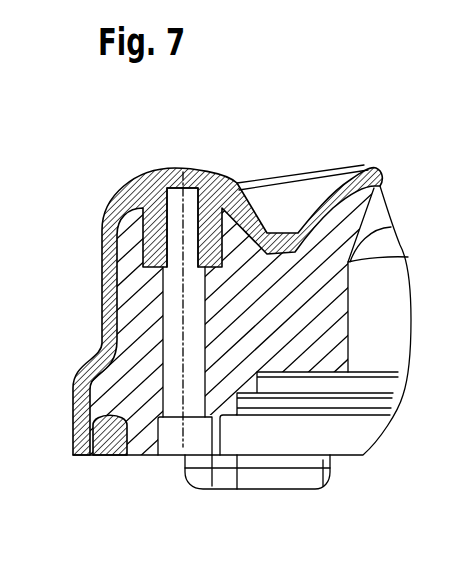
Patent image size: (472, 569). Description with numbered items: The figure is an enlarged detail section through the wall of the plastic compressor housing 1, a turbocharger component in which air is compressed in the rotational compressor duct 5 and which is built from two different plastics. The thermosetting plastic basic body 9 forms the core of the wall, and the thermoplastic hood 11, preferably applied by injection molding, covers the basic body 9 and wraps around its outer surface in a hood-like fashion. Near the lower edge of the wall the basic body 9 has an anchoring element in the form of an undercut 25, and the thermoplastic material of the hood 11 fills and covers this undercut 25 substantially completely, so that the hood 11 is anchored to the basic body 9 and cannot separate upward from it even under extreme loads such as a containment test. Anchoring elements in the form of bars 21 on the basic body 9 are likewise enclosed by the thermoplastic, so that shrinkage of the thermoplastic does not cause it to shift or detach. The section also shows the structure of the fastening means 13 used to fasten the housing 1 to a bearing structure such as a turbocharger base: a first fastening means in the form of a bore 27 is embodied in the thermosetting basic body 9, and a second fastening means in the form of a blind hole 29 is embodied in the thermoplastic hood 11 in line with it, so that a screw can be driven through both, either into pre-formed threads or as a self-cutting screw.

The plastic compressor housing 1 is at (391, 160).
The rotational compressor duct 5 is at (398, 300).
The basic body 9 is at (133, 337).
The thermoplastic hood 11 is at (103, 300).
The fastening means 13 is at (160, 281).
The bars 21 is at (274, 488).
The undercut 25 is at (88, 458).
The bore 27 is at (173, 387).
The blind hole 29 is at (191, 200).